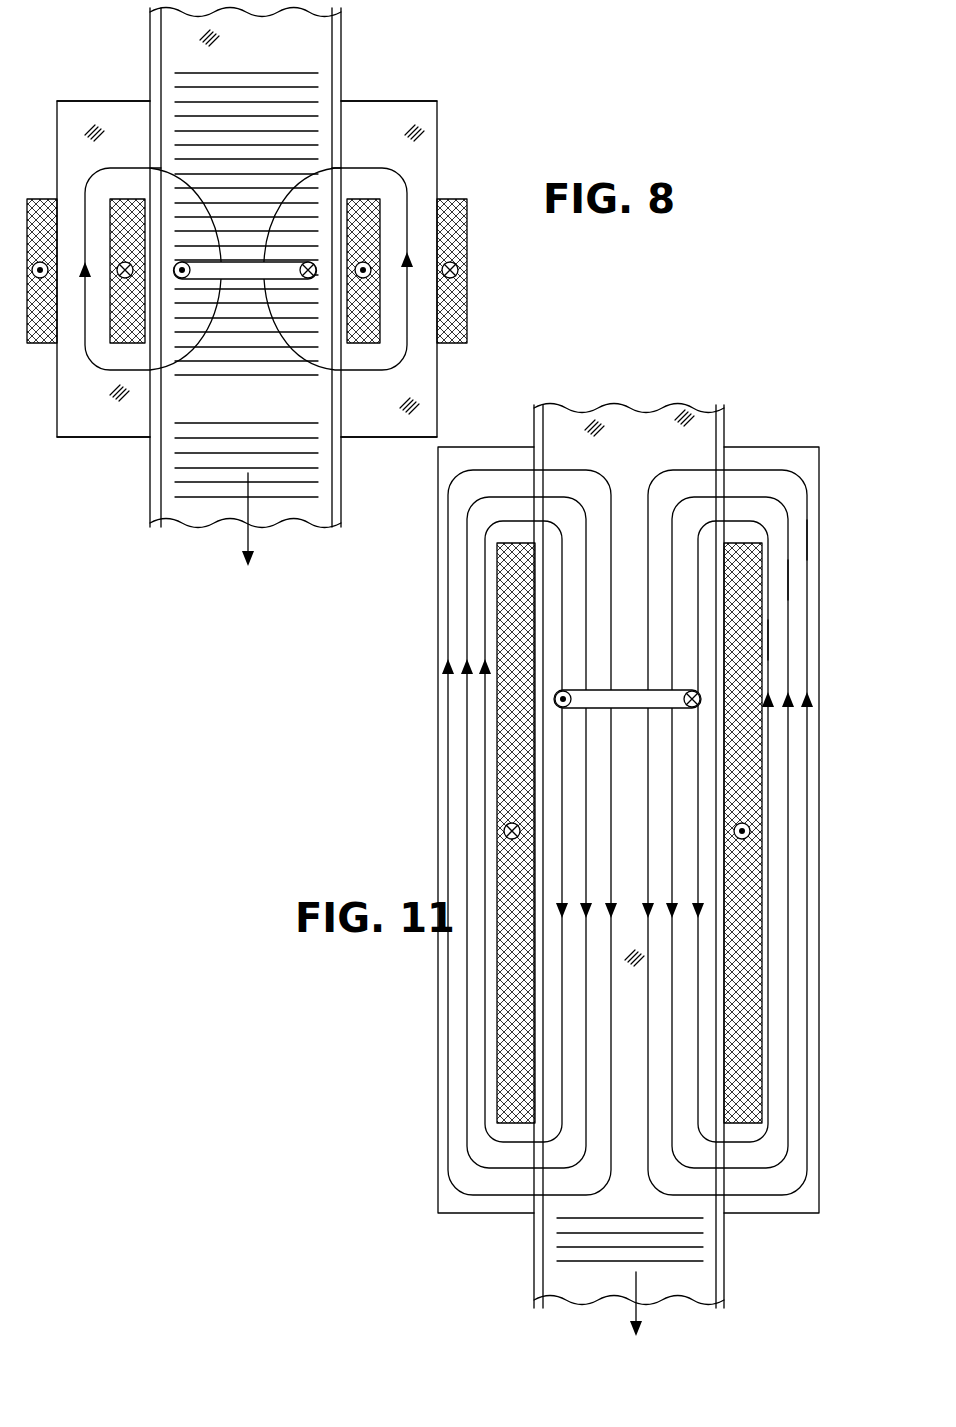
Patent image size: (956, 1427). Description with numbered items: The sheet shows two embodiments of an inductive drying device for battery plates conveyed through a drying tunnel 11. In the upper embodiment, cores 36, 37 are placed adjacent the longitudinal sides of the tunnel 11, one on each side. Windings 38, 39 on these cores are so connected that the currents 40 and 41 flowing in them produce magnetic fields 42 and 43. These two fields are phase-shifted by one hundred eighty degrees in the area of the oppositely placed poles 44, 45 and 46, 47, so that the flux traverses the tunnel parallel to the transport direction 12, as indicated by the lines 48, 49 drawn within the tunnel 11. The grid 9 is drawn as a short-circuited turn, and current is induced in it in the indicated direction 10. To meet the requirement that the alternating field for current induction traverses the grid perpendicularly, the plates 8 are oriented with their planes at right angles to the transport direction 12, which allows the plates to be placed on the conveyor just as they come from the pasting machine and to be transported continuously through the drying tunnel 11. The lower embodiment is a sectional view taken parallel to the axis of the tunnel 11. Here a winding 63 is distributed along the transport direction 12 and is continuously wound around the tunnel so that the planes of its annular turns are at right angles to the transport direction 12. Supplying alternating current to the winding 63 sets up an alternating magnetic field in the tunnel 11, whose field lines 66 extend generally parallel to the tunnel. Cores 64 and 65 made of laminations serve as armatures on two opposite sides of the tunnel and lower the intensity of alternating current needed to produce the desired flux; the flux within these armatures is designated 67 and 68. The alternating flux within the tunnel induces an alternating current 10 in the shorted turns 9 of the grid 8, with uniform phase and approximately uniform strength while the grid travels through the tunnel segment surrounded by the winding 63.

In FIG. 8, the plates 8 is at (283, 73).
In FIG. 11, the plates 8 is at (695, 1262).
In FIG. 8, the grid 9 is at (314, 262).
In FIG. 11, the grid 9 is at (663, 708).
In FIG. 8, the induced current direction 10 is at (312, 279).
In FIG. 11, the induced current direction 10 is at (690, 712).
In FIG. 8, the drying tunnel 11 is at (155, 498).
In FIG. 11, the drying tunnel 11 is at (538, 1262).
In FIG. 8, the transport direction 12 is at (251, 540).
In FIG. 11, the transport direction 12 is at (636, 1290).
In FIG. 8, the core 36 is at (427, 157).
In FIG. 8, the core 37 is at (62, 151).
In FIG. 8, the winding 38 is at (457, 200).
In FIG. 8, the winding 39 is at (24, 188).
In FIG. 8, the current 40 is at (460, 260).
In FIG. 8, the current 41 is at (35, 345).
In FIG. 8, the magnetic field 42 is at (412, 362).
In FIG. 8, the magnetic field 43 is at (92, 372).
In FIG. 8, the pole 44 is at (368, 108).
In FIG. 8, the pole 45 is at (112, 105).
In FIG. 8, the pole 46 is at (385, 437).
In FIG. 8, the pole 47 is at (107, 417).
In FIG. 8, the flux line 48 is at (195, 357).
In FIG. 8, the flux line 49 is at (290, 360).
In FIG. 11, the winding 63 is at (752, 830).
In FIG. 11, the core 64 is at (808, 1200).
In FIG. 11, the core 65 is at (457, 1210).
In FIG. 11, the magnetic field lines 66 is at (646, 503).
In FIG. 11, the magnetic flux in armature 67 is at (807, 497).
In FIG. 11, the magnetic flux in armature 68 is at (448, 556).